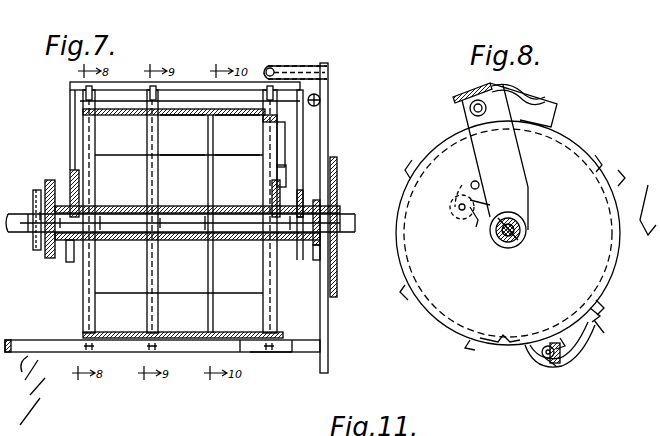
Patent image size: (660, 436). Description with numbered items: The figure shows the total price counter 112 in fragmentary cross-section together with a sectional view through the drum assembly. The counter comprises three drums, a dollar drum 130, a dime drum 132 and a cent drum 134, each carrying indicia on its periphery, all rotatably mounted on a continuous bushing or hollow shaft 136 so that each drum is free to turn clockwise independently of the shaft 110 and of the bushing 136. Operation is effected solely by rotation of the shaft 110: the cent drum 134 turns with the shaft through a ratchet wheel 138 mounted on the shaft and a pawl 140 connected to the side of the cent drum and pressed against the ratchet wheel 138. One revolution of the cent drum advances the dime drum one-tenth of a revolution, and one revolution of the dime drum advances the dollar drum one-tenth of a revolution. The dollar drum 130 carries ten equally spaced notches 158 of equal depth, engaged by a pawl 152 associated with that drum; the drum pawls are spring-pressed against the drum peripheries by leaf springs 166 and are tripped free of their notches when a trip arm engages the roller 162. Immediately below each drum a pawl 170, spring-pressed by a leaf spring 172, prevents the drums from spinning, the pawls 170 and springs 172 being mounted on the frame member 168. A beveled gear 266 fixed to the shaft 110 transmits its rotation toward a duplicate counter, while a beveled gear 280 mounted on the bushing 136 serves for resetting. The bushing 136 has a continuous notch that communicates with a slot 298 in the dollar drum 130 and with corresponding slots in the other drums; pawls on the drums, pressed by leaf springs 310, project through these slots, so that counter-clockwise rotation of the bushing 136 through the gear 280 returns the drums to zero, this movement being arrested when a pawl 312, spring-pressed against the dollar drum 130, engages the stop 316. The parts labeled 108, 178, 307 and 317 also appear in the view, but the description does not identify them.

In FIG. 7, the dollar drum 130 is at (112, 125).
In FIG. 8, the dollar drum 130 is at (448, 325).
In FIG. 7, the dime drum 132 is at (178, 128).
In FIG. 7, the cent drum 134 is at (233, 125).
In FIG. 7, the bushing or hollow shaft 136 is at (172, 206).
In FIG. 7, the beveled gear 280 is at (52, 182).
In FIG. 7, the beveled gear 266 is at (38, 252).
In FIG. 7, the total price counter 112 is at (193, 348).
In FIG. 7, the frame member 168 is at (250, 356).
In FIG. 8, the frame member 168 is at (558, 362).
In FIG. 7, the pawl 140 is at (285, 177).
In FIG. 7, the shaft 110 is at (330, 242).
In FIG. 8, the shaft 110 is at (527, 230).
In FIG. 7, the hatched post 108 is at (337, 170).
In FIG. 7, the roller 162 is at (295, 72).
In FIG. 7, the ratchet wheel 138 is at (282, 262).
In FIG. 8, the pawl 152 is at (548, 108).
In FIG. 8, the hatched cap strip 178 is at (465, 90).
In FIG. 8, the leaf springs 166 is at (540, 97).
In FIG. 8, the notches 158 is at (598, 160).
In FIG. 8, the slot 298 is at (505, 222).
In FIG. 8, the leaf springs 310 is at (452, 207).
In FIG. 8, the link 307 is at (474, 218).
In FIG. 8, the stop 316 is at (505, 335).
In FIG. 8, the pawl 312 is at (541, 350).
In FIG. 8, the leaf spring 172 is at (572, 352).
In FIG. 8, the pawl 170 is at (600, 318).
In FIG. 8, the pin 317 is at (553, 366).